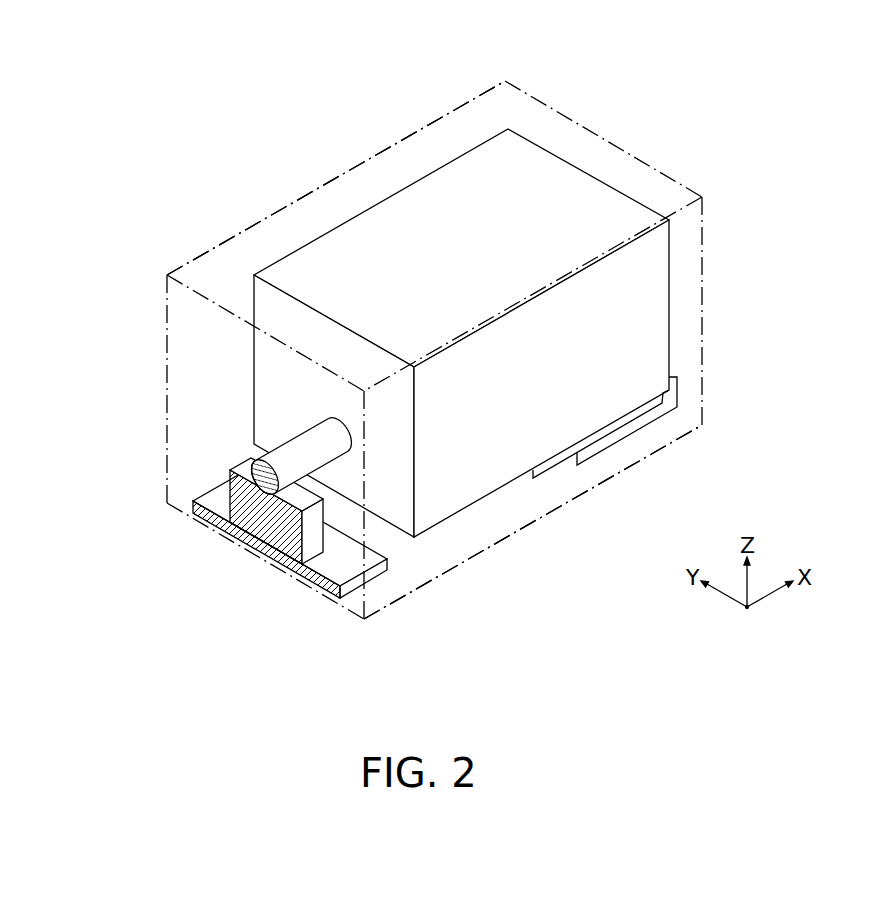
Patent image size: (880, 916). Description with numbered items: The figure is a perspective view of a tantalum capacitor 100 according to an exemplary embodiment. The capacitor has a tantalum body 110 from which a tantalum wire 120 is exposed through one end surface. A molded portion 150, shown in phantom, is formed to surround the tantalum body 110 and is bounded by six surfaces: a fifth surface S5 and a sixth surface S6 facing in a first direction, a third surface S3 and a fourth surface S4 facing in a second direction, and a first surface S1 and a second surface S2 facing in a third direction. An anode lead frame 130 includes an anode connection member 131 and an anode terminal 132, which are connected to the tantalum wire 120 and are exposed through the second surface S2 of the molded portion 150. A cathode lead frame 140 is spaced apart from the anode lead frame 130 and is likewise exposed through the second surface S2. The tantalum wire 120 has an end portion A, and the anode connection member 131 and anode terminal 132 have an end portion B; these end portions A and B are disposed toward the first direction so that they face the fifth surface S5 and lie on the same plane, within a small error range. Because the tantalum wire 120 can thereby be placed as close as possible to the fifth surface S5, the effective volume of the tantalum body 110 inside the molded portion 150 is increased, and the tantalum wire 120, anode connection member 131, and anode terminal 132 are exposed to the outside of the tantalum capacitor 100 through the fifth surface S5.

The tantalum capacitor 100 is at (285, 25).
The tantalum body 110 is at (418, 220).
The tantalum wire 120 is at (281, 434).
The anode lead frame 130 is at (304, 566).
The anode connection member 131 is at (274, 560).
The anode terminal 132 is at (375, 577).
The cathode lead frame 140 is at (655, 420).
The molded portion 150 is at (395, 319).
The end portion of tantalum wire A is at (250, 522).
The end portion of anode connection member and anode terminal B is at (238, 487).
The first surface S1 is at (460, 132).
The second surface S2 is at (488, 527).
The third surface S3 is at (562, 484).
The fourth surface S4 is at (281, 234).
The fifth surface S5 is at (203, 352).
The sixth surface S6 is at (631, 183).